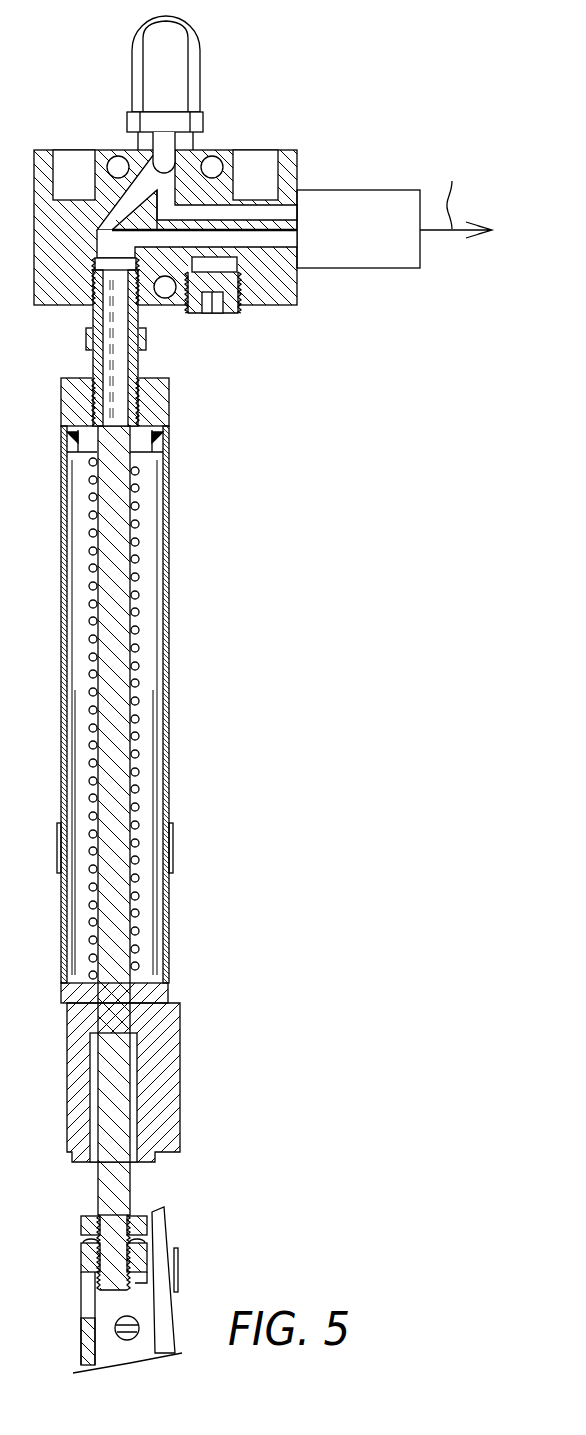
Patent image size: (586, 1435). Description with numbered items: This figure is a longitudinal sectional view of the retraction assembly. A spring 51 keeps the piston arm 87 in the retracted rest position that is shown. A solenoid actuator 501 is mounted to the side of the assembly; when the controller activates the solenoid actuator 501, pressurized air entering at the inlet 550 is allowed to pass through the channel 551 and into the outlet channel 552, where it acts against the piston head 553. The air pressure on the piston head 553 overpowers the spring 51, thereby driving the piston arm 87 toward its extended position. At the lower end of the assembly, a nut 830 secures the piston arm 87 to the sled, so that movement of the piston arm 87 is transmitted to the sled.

The inlet 550 is at (197, 62).
The channel 551 is at (238, 212).
The outlet channel 552 is at (270, 238).
The solenoid actuator 501 is at (410, 268).
The piston head 553 is at (137, 442).
The spring 51 is at (133, 740).
The piston arm 87 is at (130, 1180).
The nut 830 is at (165, 1223).